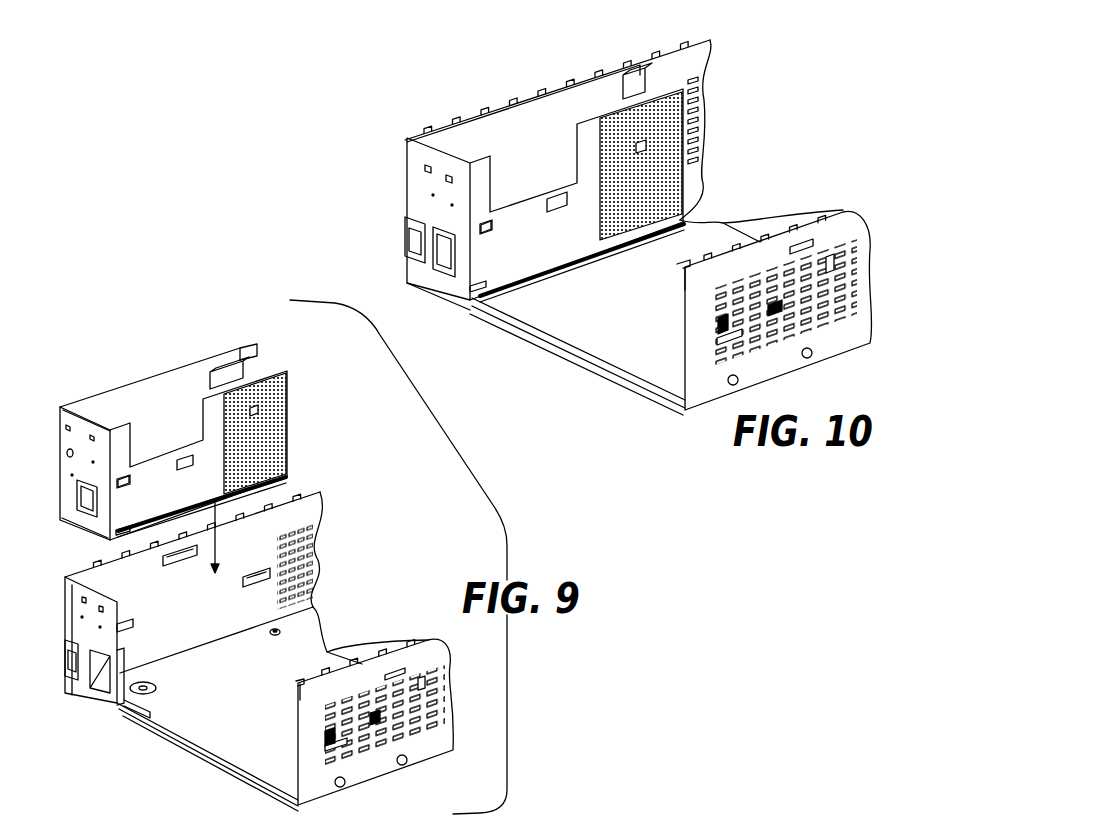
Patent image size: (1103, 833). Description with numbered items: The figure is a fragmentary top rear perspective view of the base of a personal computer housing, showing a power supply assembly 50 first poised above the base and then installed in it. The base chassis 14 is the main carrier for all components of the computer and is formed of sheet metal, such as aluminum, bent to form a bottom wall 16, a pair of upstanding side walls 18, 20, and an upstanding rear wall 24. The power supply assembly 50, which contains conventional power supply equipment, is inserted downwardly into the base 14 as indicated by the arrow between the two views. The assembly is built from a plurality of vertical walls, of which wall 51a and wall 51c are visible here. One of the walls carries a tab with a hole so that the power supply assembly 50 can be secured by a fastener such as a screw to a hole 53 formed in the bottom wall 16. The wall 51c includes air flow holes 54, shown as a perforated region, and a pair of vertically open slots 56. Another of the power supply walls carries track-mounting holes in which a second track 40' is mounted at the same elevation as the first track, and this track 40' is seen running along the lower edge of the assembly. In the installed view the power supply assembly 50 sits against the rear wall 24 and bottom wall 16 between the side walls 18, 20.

In FIG. 9, the base chassis 14 is at (319, 636).
In FIG. 10, the base chassis 14 is at (644, 400).
In FIG. 9, the bottom wall 16 is at (221, 715).
In FIG. 9, the side wall 18 is at (170, 627).
In FIG. 9, the side wall 20 is at (418, 755).
In FIG. 9, the rear wall 24 is at (93, 703).
In FIG. 9, the second track 40' is at (249, 494).
In FIG. 10, the second track 40' is at (634, 224).
In FIG. 9, the power supply assembly 50 is at (293, 428).
In FIG. 10, the power supply assembly 50 is at (527, 87).
In FIG. 9, the vertical wall 51a is at (190, 372).
In FIG. 9, the vertical wall 51c is at (120, 512).
In FIG. 9, the hole 53 is at (272, 641).
In FIG. 9, the air flow holes 54 is at (286, 380).
In FIG. 10, the air flow holes 54 is at (673, 127).
In FIG. 9, the vertically open slots 56 is at (123, 480).
In FIG. 10, the vertically open slots 56 is at (491, 236).